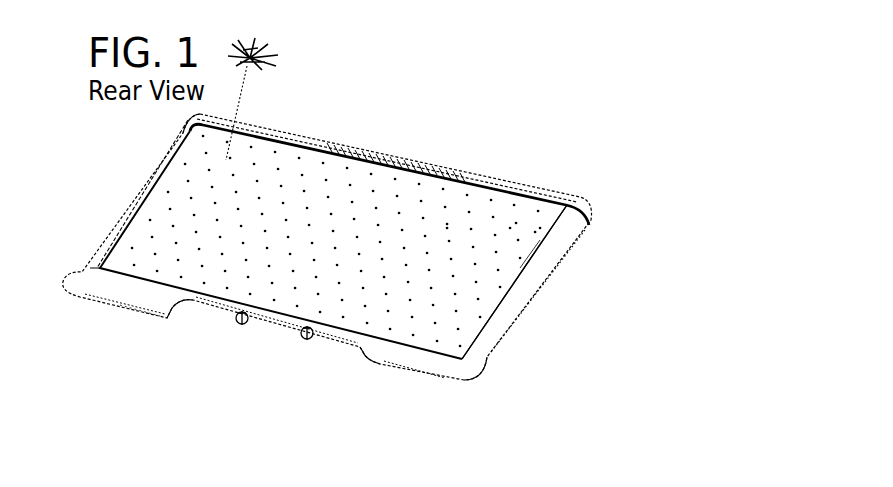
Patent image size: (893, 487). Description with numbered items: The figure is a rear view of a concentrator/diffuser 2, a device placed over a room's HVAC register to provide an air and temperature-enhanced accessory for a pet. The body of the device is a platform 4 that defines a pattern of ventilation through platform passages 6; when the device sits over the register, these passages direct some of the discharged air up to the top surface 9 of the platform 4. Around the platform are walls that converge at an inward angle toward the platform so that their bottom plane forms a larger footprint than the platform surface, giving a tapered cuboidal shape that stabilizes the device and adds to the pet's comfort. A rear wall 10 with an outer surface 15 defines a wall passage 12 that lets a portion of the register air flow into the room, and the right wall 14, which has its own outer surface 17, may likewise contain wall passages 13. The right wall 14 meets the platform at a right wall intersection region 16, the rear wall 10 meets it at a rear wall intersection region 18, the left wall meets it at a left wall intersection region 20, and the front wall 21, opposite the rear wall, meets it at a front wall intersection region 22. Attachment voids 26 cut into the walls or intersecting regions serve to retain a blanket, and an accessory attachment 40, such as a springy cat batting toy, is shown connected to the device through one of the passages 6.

The concentrator/diffuser 2 is at (627, 185).
The platform 4 is at (400, 237).
The through platform passages 6 is at (535, 232).
The top surface 9 is at (513, 274).
The rear wall 10 is at (113, 293).
The wall passage 12 is at (232, 337).
The wall passages 13 is at (540, 296).
The right wall 14 is at (107, 245).
The outer surface 15 is at (146, 293).
The right wall intersection region 16 is at (156, 188).
The outer surface 17 is at (100, 262).
The rear wall intersection region 18 is at (442, 355).
The left wall intersection region 20 is at (500, 313).
The front wall 21 is at (256, 124).
The front wall intersection region 22 is at (315, 144).
The attachment voids 26 is at (487, 359).
The accessory attachment 40 is at (268, 56).